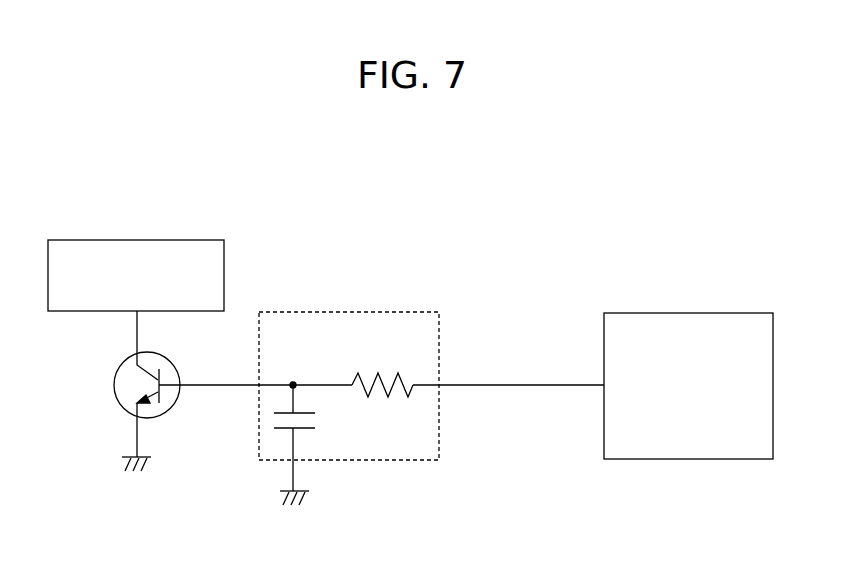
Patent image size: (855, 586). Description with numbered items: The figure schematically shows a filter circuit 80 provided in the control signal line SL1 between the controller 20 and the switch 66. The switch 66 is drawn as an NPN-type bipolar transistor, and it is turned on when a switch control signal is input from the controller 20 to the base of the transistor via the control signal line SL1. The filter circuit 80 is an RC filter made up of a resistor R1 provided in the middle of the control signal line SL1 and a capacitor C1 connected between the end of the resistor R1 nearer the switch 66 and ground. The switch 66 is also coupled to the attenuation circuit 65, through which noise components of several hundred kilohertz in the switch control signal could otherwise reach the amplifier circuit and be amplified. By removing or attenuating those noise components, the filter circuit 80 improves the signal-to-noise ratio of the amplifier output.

The attenuation circuit 65 is at (178, 240).
The switch 66 is at (173, 355).
The filter circuit 80 is at (349, 406).
The controller 20 is at (731, 313).
The resistor R1 is at (382, 367).
The capacitor C1 is at (310, 461).
The control signal line SL1 is at (508, 372).